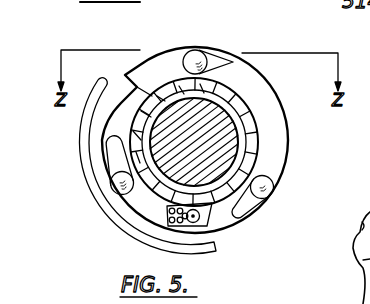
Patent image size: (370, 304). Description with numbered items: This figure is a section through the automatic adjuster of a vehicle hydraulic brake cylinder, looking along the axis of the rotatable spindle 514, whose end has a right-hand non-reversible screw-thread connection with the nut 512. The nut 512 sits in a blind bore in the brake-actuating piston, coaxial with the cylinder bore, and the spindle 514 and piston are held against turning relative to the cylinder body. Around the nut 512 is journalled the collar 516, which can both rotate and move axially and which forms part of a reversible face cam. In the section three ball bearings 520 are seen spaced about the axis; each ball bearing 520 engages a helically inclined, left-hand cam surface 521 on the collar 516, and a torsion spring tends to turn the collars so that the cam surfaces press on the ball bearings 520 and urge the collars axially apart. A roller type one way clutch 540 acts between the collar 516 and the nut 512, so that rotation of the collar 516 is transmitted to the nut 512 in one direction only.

The nut 512 is at (133, 121).
The rotatable spindle 514 is at (140, 236).
The collar 516 is at (272, 104).
The ball bearings 520 is at (199, 50).
The cam surface 521 is at (262, 199).
The roller type one way clutch 540 is at (202, 213).